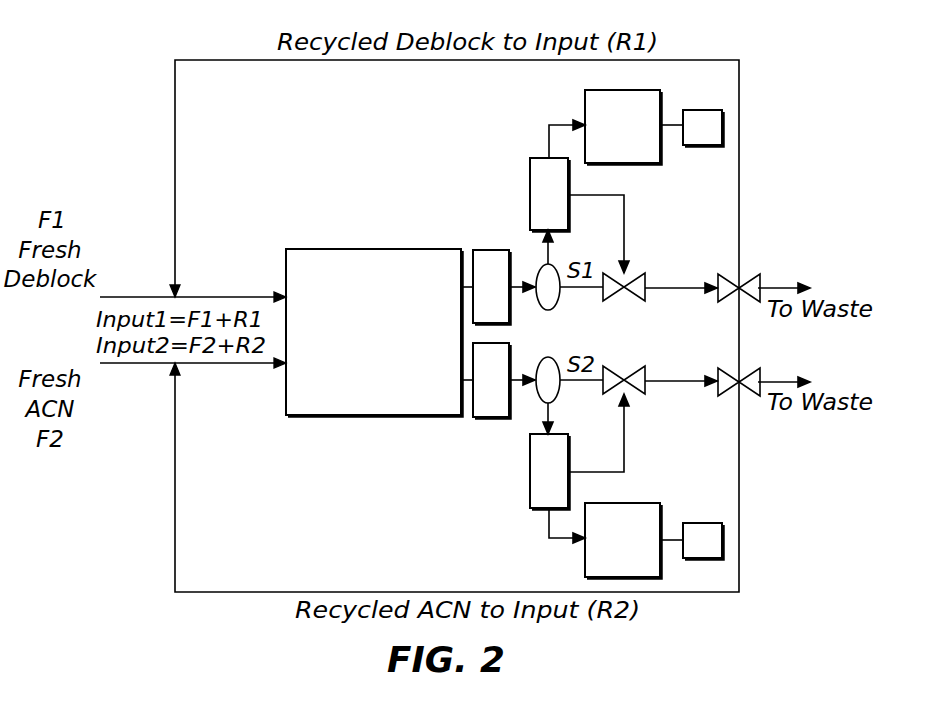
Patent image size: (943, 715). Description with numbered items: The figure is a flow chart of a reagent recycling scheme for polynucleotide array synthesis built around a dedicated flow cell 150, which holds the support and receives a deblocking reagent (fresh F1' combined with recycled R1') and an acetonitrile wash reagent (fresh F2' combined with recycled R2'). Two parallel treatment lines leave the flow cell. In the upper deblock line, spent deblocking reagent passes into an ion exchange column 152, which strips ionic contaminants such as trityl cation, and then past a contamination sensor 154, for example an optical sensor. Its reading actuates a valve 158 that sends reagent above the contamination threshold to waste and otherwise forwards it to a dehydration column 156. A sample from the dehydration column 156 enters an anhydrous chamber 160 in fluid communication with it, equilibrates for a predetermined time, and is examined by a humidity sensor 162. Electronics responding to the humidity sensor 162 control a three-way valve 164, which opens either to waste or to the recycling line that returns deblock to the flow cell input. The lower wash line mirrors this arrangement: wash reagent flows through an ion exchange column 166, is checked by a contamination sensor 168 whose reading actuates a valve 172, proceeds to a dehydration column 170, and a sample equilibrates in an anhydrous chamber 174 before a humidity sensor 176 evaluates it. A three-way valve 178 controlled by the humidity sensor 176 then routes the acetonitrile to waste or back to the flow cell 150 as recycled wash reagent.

The flow cell 150 is at (457, 249).
The ion exchange column 152 is at (492, 249).
The contamination sensor 154 is at (553, 266).
The dehydration column 156 is at (530, 180).
The valve 158 is at (636, 280).
The anhydrous chamber 160 is at (585, 107).
The humidity sensor 162 is at (704, 147).
The valve 164 is at (746, 278).
The ion exchange column 166 is at (492, 419).
The contamination sensor 168 is at (551, 356).
The dehydration column 170 is at (530, 494).
The valve 172 is at (633, 373).
The anhydrous chamber 174 is at (628, 503).
The humidity sensor 176 is at (701, 522).
The valve 178 is at (743, 371).